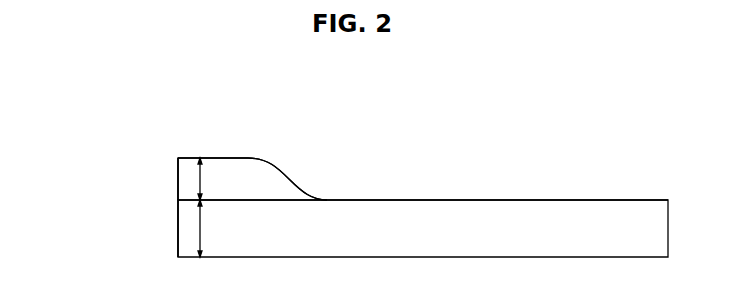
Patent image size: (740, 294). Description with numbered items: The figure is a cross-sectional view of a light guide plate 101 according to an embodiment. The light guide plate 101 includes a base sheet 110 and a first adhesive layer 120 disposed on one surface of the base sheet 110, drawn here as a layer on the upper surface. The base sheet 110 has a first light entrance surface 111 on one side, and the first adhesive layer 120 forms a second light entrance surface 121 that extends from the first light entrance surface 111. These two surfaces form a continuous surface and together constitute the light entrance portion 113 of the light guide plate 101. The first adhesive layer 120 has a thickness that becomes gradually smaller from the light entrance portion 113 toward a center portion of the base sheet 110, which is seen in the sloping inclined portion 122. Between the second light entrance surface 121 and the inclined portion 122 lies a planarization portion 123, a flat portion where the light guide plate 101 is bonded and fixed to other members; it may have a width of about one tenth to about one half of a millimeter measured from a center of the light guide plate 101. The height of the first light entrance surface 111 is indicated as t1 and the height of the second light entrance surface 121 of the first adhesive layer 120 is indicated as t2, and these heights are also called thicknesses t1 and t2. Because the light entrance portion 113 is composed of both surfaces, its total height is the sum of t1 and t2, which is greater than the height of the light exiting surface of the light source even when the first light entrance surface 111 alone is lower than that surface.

The light guide plate 101 is at (123, 100).
The base sheet 110 is at (495, 212).
The first light entrance surface 111 is at (177, 235).
The light entrance portion 113 is at (82, 170).
The first adhesive layer 120 is at (245, 173).
The second light entrance surface 121 is at (177, 183).
The inclined portion 122 is at (293, 177).
The planarization portion 123 is at (208, 157).
The height of the first light entrance surface t1 is at (200, 230).
The height of the second light entrance surface t2 is at (200, 181).